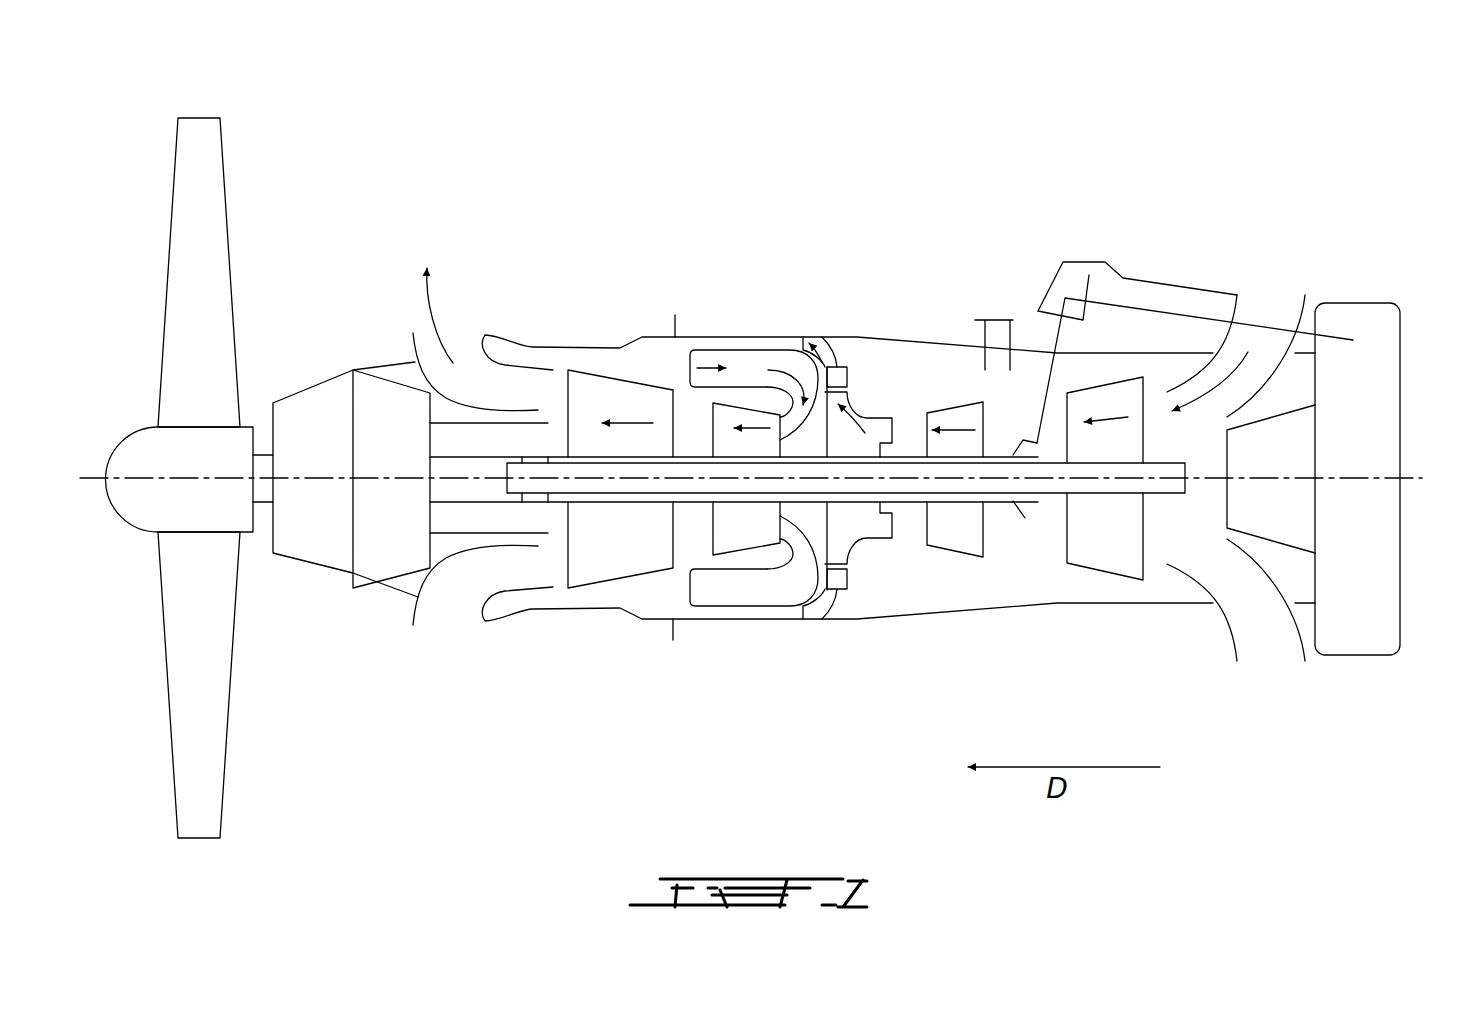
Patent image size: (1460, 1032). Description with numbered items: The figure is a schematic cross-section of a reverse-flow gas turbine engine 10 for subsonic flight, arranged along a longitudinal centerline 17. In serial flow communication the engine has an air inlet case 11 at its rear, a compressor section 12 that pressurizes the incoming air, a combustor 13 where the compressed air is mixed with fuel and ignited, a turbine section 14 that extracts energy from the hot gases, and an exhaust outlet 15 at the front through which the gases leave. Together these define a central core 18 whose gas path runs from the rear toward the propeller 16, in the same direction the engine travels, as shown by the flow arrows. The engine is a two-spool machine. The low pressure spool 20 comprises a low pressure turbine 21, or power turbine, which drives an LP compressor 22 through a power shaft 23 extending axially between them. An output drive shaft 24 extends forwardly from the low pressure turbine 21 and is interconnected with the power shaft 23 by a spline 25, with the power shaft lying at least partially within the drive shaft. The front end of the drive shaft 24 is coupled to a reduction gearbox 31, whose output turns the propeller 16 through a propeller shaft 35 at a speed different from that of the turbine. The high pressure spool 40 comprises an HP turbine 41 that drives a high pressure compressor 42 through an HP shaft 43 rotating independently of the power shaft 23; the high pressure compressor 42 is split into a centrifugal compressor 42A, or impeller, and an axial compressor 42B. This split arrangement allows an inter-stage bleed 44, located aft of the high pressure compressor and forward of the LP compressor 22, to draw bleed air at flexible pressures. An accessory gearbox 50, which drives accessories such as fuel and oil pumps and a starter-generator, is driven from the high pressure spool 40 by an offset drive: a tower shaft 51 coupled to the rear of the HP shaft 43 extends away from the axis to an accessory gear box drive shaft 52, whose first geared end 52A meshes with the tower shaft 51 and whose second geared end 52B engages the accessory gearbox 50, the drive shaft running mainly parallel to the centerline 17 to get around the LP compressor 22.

The gas turbine engine 10 is at (397, 146).
The air inlet case 11 is at (1316, 282).
The compressor section 12 is at (1145, 657).
The combustor 13 is at (763, 350).
The turbine section 14 is at (783, 657).
The exhaust outlet 15 is at (437, 625).
The propeller 16 is at (113, 398).
The centerline 17 is at (1422, 478).
The central core 18 is at (643, 400).
The low pressure spool 20 is at (1052, 512).
The low pressure turbine 21 is at (590, 382).
The LP compressor 22 is at (1124, 366).
The power shaft 23 is at (698, 463).
The output drive shaft 24 is at (488, 447).
The spline 25 is at (537, 500).
The reduction gearbox 31 is at (390, 397).
The propeller shaft 35 is at (265, 504).
The high pressure spool 40 is at (1003, 450).
The HP turbine 41 is at (746, 394).
The high pressure compressor 42 is at (822, 306).
The centrifugal compressor 42A is at (880, 530).
The axial compressor 42B is at (960, 545).
The HP shaft 43 is at (862, 503).
The inter-stage bleed 44 is at (999, 308).
The accessory gearbox 50 is at (1358, 667).
The tower shaft 51 is at (1050, 380).
The accessory gear box drive shaft 52 is at (1206, 304).
The first geared end 52A is at (1092, 256).
The second geared end 52B is at (1358, 323).